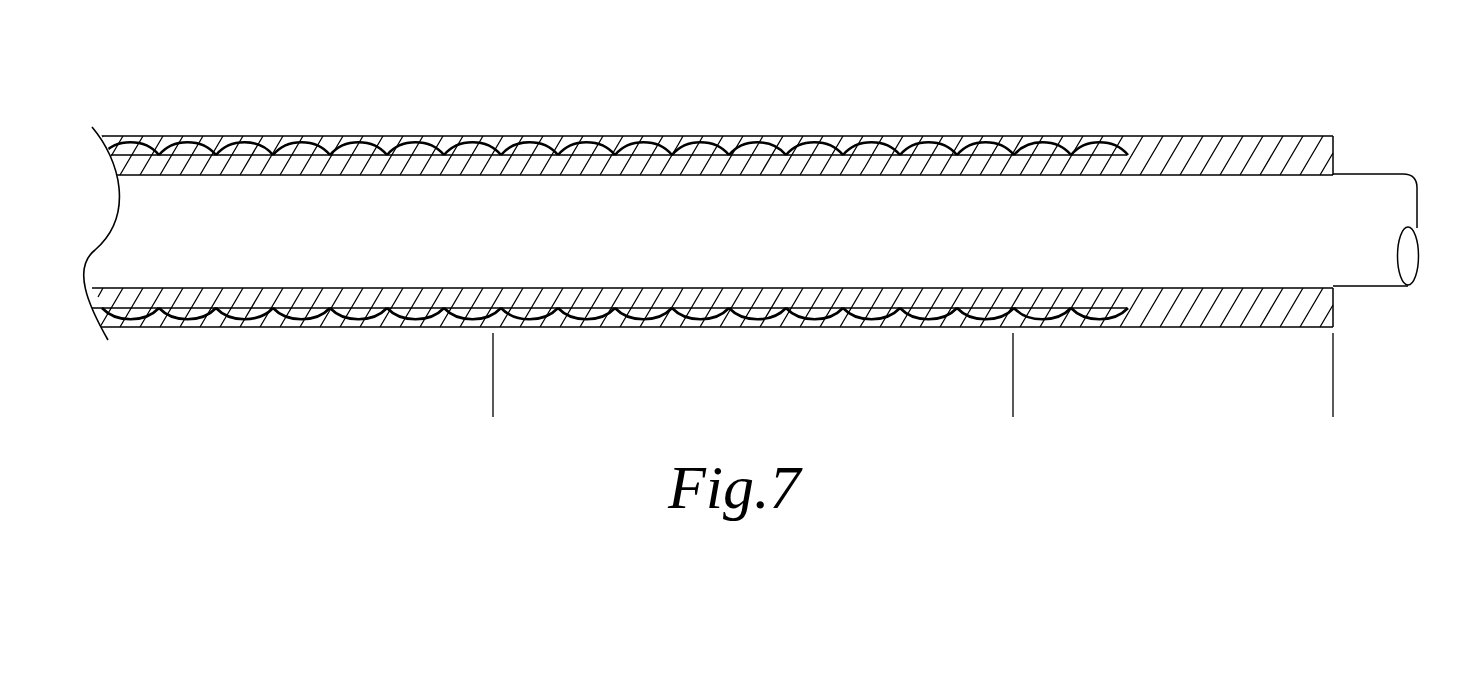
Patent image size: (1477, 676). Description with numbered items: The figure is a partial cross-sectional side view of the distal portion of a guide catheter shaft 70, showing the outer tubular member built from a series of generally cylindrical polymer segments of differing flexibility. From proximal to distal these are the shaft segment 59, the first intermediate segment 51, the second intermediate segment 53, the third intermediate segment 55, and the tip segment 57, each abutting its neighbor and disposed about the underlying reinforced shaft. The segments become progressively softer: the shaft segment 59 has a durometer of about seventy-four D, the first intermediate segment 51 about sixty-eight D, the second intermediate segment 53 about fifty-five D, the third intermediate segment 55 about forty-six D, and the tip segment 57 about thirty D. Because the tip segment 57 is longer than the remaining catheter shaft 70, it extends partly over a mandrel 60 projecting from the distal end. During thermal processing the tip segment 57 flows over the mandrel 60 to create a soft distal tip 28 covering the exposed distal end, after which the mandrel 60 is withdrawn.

The shaft segment 59 is at (98, 97).
The first intermediate segment 51 is at (678, 97).
The second intermediate segment 53 is at (865, 97).
The third intermediate segment 55 is at (1013, 97).
The tip segment 57 is at (1333, 97).
The mandrel 60 is at (1358, 302).
The catheter shaft 70 is at (493, 403).
The distal tip 28 is at (1013, 403).